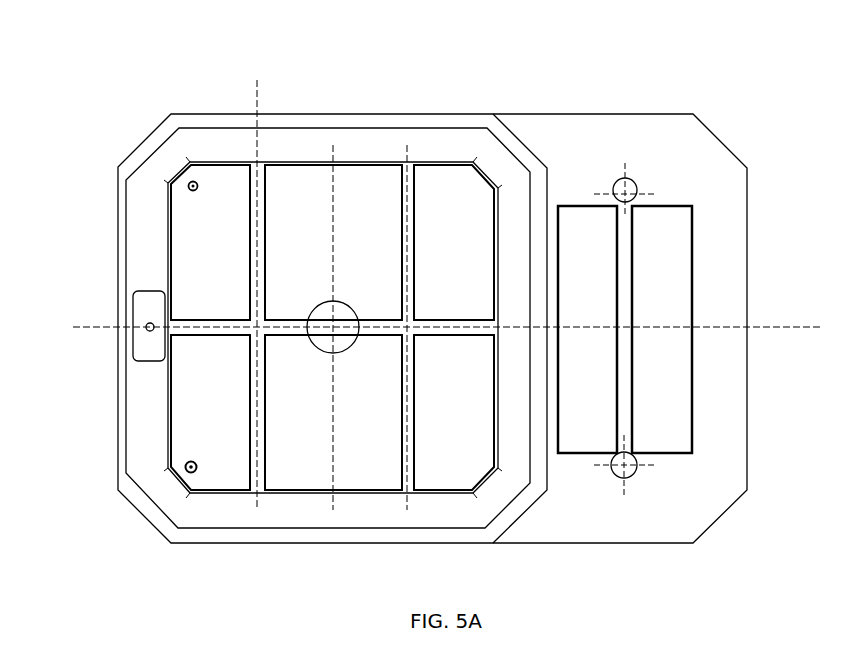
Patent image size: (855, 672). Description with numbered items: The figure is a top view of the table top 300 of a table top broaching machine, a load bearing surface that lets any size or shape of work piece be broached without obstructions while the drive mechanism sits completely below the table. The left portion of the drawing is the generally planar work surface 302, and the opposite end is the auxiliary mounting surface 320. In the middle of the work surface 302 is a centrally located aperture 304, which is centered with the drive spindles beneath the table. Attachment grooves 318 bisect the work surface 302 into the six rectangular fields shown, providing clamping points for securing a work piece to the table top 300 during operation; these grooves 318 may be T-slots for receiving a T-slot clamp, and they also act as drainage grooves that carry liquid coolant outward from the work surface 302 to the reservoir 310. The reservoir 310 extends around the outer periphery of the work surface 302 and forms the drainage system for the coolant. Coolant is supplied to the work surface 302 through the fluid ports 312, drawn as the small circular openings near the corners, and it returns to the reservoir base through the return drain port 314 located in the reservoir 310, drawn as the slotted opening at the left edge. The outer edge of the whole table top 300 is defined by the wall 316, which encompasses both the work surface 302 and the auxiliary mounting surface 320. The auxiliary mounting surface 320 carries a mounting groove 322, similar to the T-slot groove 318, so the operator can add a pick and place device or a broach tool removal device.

The table top 300 is at (118, 110).
The work surface 302 is at (305, 205).
The aperture 304 is at (325, 353).
The reservoir 310 is at (143, 231).
The fluid ports 312 is at (188, 185).
The return drain port 314 is at (147, 329).
The wall 316 is at (447, 535).
The attachment grooves 318 is at (408, 195).
The auxiliary mounting surface 320 is at (668, 267).
The mounting groove 322 is at (622, 242).